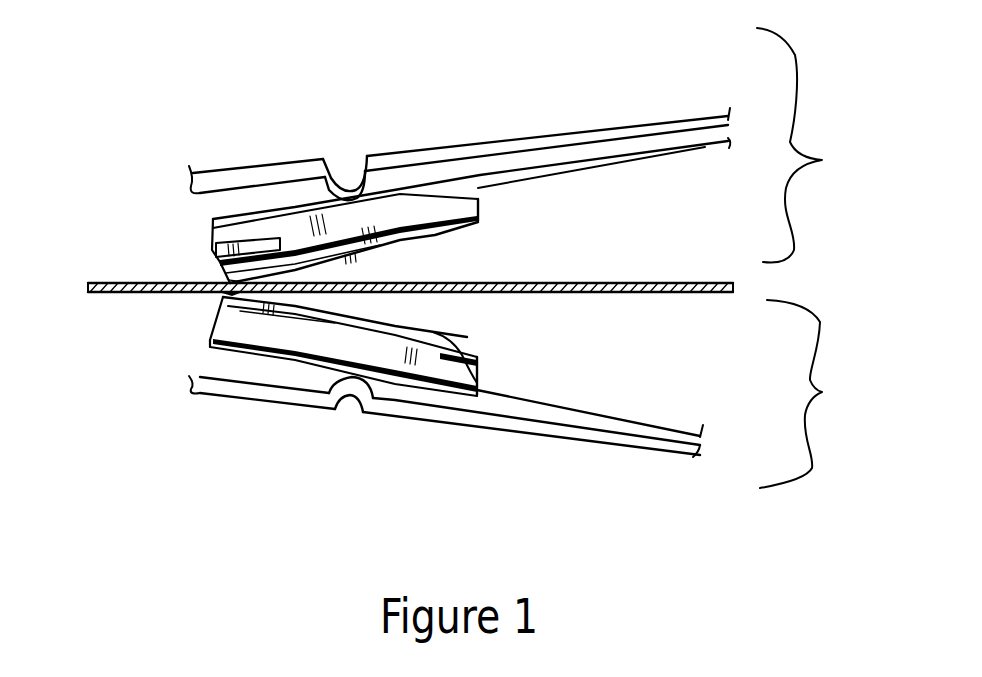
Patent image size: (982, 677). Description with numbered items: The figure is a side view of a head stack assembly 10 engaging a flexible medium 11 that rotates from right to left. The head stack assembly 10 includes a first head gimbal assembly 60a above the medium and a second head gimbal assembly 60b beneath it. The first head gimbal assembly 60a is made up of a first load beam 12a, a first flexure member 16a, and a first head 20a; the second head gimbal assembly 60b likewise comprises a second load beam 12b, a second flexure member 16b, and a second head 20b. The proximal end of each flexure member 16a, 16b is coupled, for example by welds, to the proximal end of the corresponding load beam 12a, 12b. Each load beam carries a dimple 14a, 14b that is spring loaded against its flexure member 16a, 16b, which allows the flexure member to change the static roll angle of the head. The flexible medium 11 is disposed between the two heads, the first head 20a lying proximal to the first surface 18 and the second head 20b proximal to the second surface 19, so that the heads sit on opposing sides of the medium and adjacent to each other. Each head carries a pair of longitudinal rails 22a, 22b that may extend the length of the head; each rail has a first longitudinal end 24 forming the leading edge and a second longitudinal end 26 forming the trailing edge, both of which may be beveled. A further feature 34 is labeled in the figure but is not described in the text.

The head stack assembly 10 is at (103, 168).
The flexible medium 11 is at (657, 283).
The first load beam 12a is at (638, 128).
The second load beam 12b is at (573, 437).
The dimple 14a is at (339, 192).
The notch in second arm 14b is at (351, 397).
The first flexure member 16a is at (615, 157).
The second flexure member 16b is at (610, 422).
The first surface 18 is at (585, 283).
The second surface 19 is at (612, 292).
The first head 20a is at (487, 187).
The second head 20b is at (470, 363).
The longitudinal rail 22a is at (430, 240).
The longitudinal rail 22b is at (478, 382).
The first longitudinal end 24 is at (455, 336).
The second longitudinal end 26 is at (226, 280).
The slot 34 is at (220, 253).
The first head gimbal assembly 60a is at (497, 155).
The second head gimbal assembly 60b is at (544, 399).